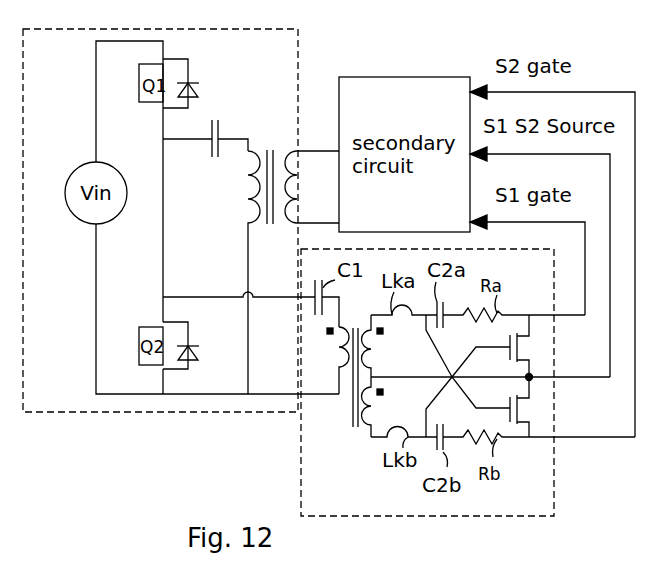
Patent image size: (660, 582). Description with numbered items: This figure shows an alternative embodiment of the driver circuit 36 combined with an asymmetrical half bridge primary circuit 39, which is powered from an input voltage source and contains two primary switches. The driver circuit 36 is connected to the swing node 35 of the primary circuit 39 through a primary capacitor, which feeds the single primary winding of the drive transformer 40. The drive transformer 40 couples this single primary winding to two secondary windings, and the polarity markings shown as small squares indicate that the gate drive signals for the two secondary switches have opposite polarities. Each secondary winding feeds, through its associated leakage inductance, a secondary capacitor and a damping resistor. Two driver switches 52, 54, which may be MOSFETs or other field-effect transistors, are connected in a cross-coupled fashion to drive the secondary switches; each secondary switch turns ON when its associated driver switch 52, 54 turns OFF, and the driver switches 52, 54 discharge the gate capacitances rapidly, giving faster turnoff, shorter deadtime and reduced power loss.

The swing node 35 is at (164, 296).
The driver circuit 36 is at (507, 516).
The asymmetrical half bridge primary circuit 39 is at (210, 412).
The drive transformer 40 is at (352, 403).
The driver switch 52 is at (520, 347).
The driver switch 54 is at (520, 407).